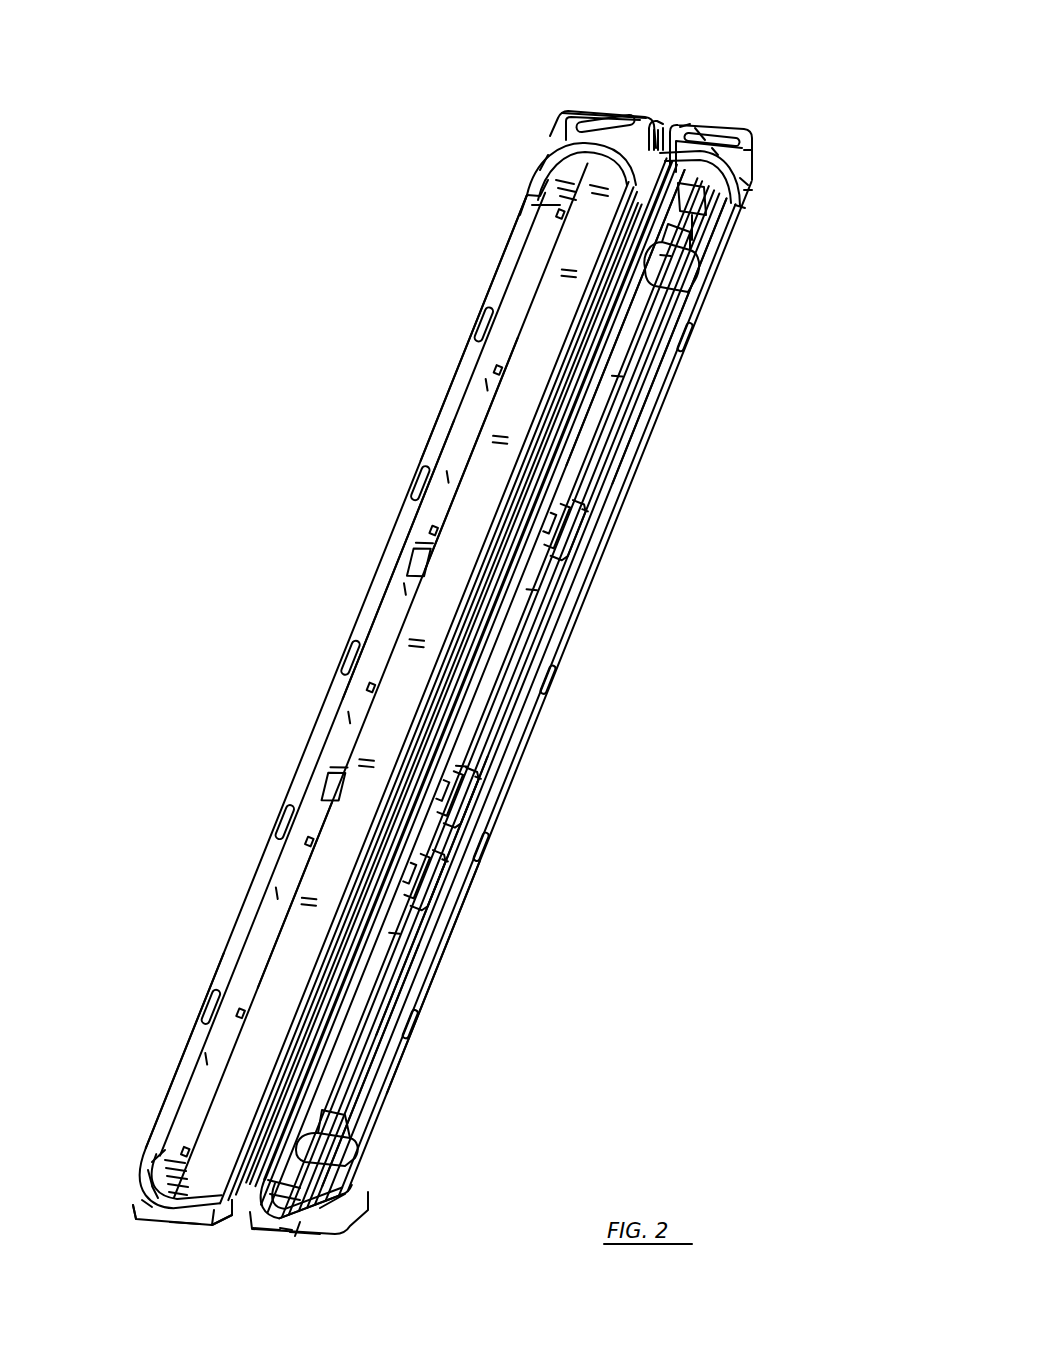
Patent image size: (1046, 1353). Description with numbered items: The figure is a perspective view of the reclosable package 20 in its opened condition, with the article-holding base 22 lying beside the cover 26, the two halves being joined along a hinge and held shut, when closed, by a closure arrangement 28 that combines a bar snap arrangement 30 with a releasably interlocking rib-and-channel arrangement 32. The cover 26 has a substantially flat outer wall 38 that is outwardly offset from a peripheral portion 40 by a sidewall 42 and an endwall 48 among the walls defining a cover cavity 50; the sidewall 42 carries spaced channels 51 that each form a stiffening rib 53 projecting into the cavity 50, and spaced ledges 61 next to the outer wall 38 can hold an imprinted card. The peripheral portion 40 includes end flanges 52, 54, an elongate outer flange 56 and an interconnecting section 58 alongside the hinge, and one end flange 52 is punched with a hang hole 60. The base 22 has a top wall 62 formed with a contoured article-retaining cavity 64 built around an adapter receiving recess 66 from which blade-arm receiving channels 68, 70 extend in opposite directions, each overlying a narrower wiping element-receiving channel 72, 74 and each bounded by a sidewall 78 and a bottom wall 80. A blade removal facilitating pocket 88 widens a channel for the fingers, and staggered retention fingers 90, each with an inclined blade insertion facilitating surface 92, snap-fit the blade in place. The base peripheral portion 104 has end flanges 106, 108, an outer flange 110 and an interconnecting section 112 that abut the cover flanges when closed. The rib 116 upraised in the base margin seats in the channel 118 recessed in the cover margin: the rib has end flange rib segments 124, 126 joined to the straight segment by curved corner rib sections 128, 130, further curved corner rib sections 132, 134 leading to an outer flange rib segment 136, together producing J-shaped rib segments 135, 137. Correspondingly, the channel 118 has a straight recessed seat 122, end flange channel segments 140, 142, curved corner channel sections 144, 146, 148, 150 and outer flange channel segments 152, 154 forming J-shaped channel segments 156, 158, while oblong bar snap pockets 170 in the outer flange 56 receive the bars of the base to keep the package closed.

The reclosable package 20 is at (408, 203).
The article-holding base 22 is at (667, 505).
The cover 26 is at (370, 550).
The reclosable package closure arrangement 28 is at (717, 318).
The bar snap arrangement 30 is at (503, 856).
The releasably interlocking rib-and-channel arrangement 32 is at (575, 124).
The outer wall 38 is at (270, 1035).
The peripheral portion 40 is at (437, 463).
The sidewall 42 is at (302, 932).
The endwall 48 is at (546, 166).
The cavity 50 is at (472, 406).
The channel 51 is at (410, 545).
The end flange 52 is at (584, 112).
The sidewall stiffening rib 53 is at (420, 575).
The end flange 54 is at (148, 1221).
The outer flange 56 is at (508, 273).
The interconnecting section 58 is at (302, 881).
The hang hole 60 is at (605, 121).
The ledge 61 is at (565, 216).
The top wall 62 is at (612, 456).
The article-retaining cavity 64 is at (383, 1056).
The adapter receiving recess 66 is at (517, 656).
The blade-arm receiving channel 68 is at (642, 393).
The blade-arm receiving channel 70 is at (407, 981).
The wiping element-receiving channel 72 is at (752, 160).
The wiping element-receiving channel 74 is at (700, 136).
The sidewall 78 is at (617, 371).
The bottom wall 80 is at (722, 168).
The blade removal facilitating pocket 88 is at (718, 240).
The blade-engaging retention finger 90 is at (527, 580).
The blade insertion facilitating surface 92 is at (746, 180).
The peripheral portion 104 is at (387, 1131).
The end flange 106 is at (748, 150).
The end flange 108 is at (300, 1236).
The outer flange 110 is at (452, 941).
The interconnecting section 112 is at (712, 162).
The rib 116 is at (347, 1201).
The channel 118 is at (150, 1168).
The recessed seat 122 is at (418, 720).
The end flange rib segment 124 is at (703, 136).
The end flange rib segment 126 is at (300, 1240).
The curved corner interconnecting rib section 128 is at (690, 125).
The curved corner interconnecting rib section 130 is at (266, 1230).
The curved corner interconnecting rib section 132 is at (750, 190).
The curved corner interconnecting rib section 134 is at (337, 1212).
The J-shaped rib segment 135 is at (716, 152).
The outer flange rib segment 136 is at (745, 206).
The J-shaped rib segment 137 is at (285, 1238).
The end flange channel segment 140 is at (655, 125).
The end flange channel segment 142 is at (185, 1226).
The curved corner interconnecting channel section 144 is at (661, 128).
The curved corner interconnecting channel section 146 is at (228, 1214).
The curved corner interconnecting channel section 148 is at (560, 150).
The curved corner interconnecting channel section 150 is at (148, 1183).
The outer flange channel segment 152 is at (540, 182).
The outer flange channel segment 154 is at (160, 1160).
The J-shaped channel segment 156 is at (556, 140).
The J-shaped channel segment 158 is at (140, 1198).
The bar snap pocket 170 is at (480, 325).